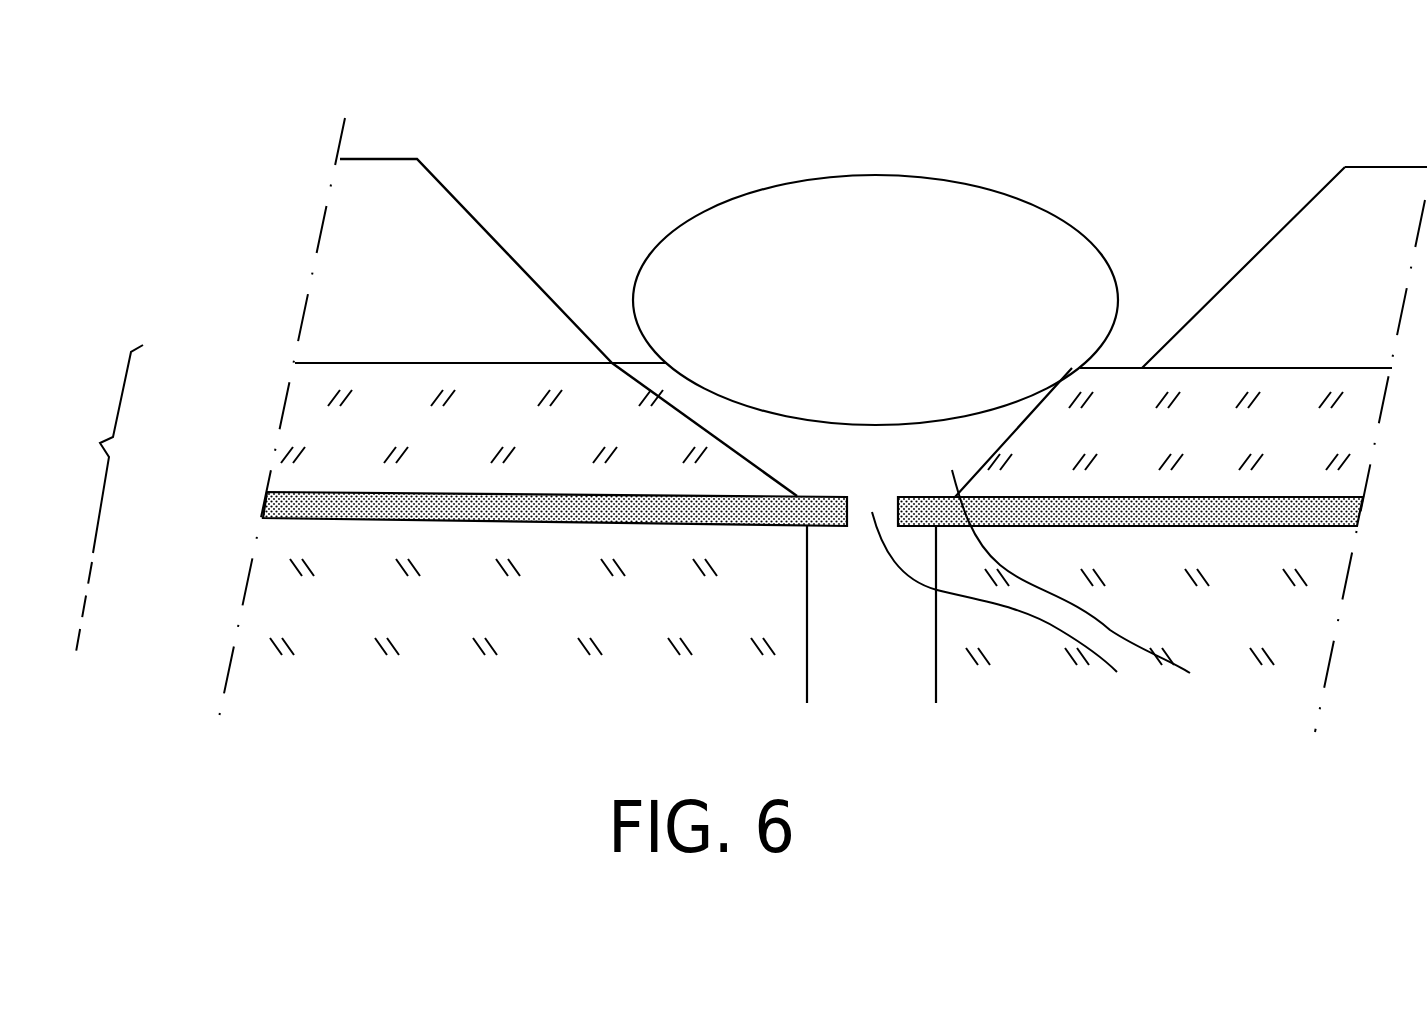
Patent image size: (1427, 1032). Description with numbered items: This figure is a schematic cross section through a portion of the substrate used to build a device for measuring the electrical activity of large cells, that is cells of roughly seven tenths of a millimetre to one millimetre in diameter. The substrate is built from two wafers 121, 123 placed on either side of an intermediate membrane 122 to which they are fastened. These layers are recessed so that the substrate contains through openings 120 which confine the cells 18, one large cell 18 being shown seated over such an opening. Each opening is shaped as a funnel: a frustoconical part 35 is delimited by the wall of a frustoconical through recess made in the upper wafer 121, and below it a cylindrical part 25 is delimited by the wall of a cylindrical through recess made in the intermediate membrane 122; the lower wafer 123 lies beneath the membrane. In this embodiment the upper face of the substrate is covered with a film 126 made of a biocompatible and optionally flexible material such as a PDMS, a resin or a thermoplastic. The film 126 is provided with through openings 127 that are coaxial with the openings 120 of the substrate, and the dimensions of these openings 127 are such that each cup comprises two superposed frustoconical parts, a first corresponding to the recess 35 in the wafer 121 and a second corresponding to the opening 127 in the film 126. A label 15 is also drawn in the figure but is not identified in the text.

The through openings of the film 127 is at (500, 187).
The film 126 is at (333, 254).
The wafer 121 is at (308, 418).
The intermediate membrane 122 is at (287, 507).
The wafer 123 is at (263, 608).
The cell 18 is at (963, 215).
The first electrode 15 is at (900, 683).
The cylindrical part 25 is at (1004, 613).
The frustoconical part 35 is at (1033, 720).
The through opening 120 is at (1041, 627).